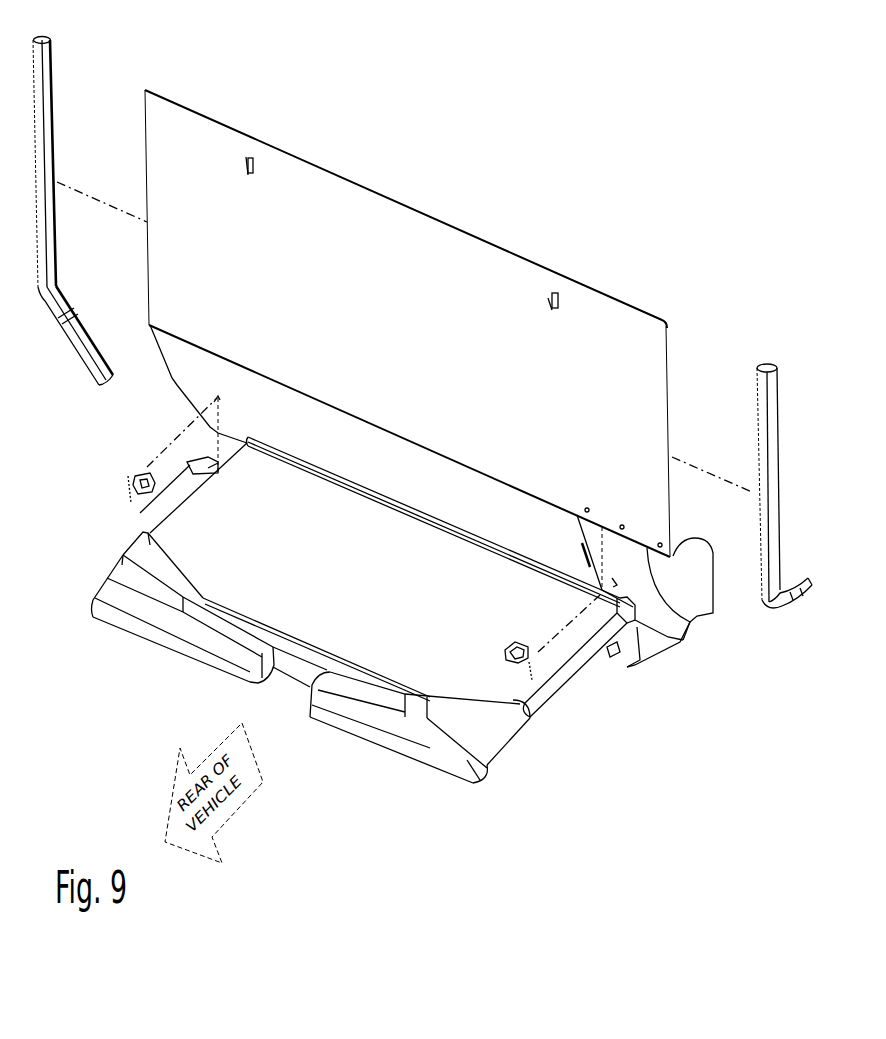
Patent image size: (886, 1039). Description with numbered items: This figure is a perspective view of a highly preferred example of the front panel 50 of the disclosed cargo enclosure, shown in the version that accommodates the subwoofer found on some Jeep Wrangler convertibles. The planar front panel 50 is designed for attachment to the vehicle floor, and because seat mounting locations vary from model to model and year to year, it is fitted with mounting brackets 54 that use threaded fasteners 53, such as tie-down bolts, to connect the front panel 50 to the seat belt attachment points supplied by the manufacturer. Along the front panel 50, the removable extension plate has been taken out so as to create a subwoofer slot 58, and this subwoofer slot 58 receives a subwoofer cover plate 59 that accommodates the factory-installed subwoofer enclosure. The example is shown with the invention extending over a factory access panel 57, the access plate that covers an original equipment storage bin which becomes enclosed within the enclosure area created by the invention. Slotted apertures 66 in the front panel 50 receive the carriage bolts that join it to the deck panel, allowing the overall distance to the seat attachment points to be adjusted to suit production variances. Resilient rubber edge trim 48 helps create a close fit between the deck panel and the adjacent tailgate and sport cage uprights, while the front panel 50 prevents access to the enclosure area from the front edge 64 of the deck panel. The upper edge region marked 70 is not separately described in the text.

The resilient rubber edge trim 48 is at (35, 38).
The front panel 50 is at (401, 313).
The threaded fasteners 53 is at (125, 477).
The mounting brackets 54 is at (185, 470).
The factory access panel 57 is at (395, 588).
The subwoofer slot 58 is at (683, 617).
The subwoofer cover plate 59 is at (702, 598).
The front edge 64 is at (257, 170).
The slotted apertures 66 is at (248, 157).
The upper edge of panel 70 is at (378, 192).